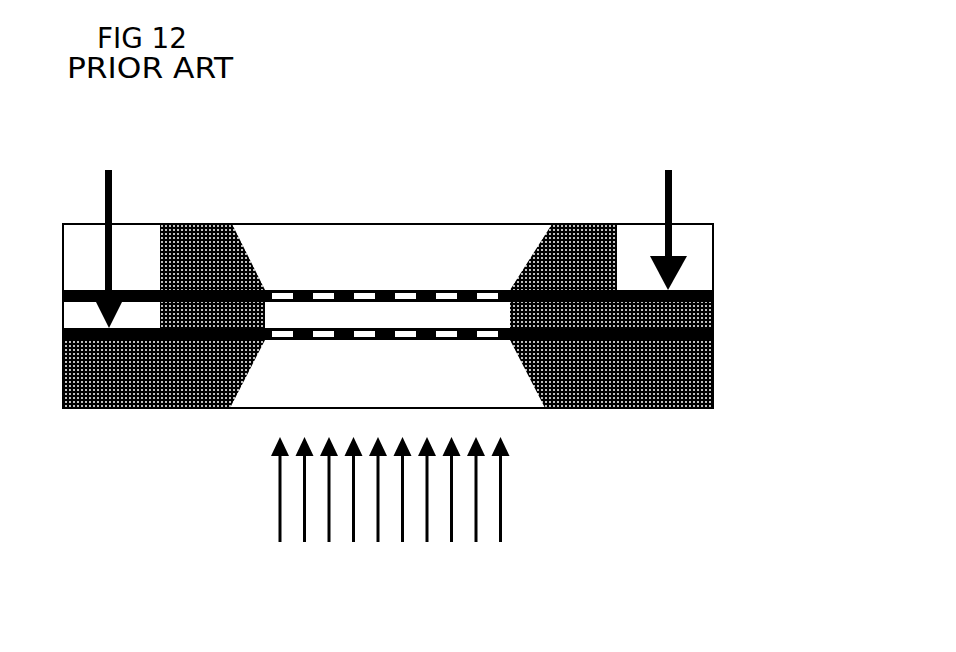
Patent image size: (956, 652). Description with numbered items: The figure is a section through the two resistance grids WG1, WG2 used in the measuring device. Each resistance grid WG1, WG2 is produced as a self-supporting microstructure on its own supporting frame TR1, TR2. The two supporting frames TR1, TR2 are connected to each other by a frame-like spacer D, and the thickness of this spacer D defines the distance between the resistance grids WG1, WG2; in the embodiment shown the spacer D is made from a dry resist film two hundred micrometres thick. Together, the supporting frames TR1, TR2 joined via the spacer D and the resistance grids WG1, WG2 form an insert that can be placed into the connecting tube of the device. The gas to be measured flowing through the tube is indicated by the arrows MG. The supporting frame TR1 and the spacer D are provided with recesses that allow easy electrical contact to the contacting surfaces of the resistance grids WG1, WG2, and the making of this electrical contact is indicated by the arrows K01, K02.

The contacting arrow K01 is at (105, 182).
The contacting arrow K02 is at (672, 180).
The resistance grid WG1 is at (343, 288).
The resistance grid WG2 is at (392, 330).
The supporting frame TR1 is at (560, 223).
The supporting frame TR2 is at (687, 393).
The spacer D is at (713, 318).
The gas flow arrows MG is at (280, 523).